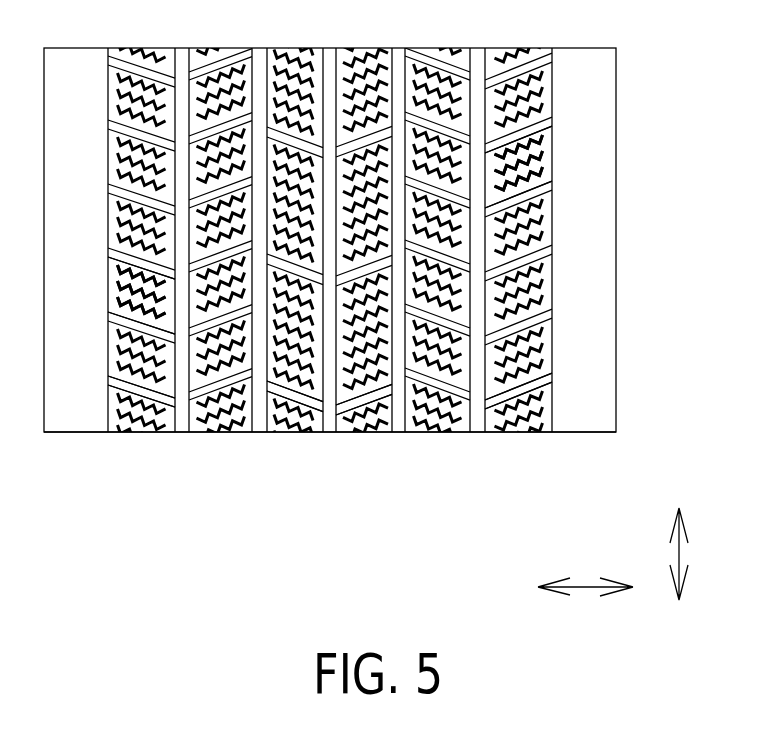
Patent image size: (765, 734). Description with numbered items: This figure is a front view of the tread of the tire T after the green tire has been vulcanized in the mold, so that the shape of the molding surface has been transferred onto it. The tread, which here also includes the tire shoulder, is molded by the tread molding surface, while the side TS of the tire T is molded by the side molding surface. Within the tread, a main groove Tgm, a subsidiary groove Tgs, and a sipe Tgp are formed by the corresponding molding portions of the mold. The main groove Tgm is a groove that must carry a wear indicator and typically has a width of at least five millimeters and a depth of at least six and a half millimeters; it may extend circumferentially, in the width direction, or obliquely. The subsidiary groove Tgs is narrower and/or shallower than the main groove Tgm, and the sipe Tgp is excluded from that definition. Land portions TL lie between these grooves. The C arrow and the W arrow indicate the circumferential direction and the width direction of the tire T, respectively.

The tire T is at (80, 462).
The side TS is at (612, 305).
The land portion (block) TL is at (116, 292).
The subsidiary groove Tgs is at (168, 402).
The main groove Tgm is at (258, 423).
The sipe Tgp is at (299, 418).
The W arrow W is at (585, 573).
The C arrow C is at (693, 554).